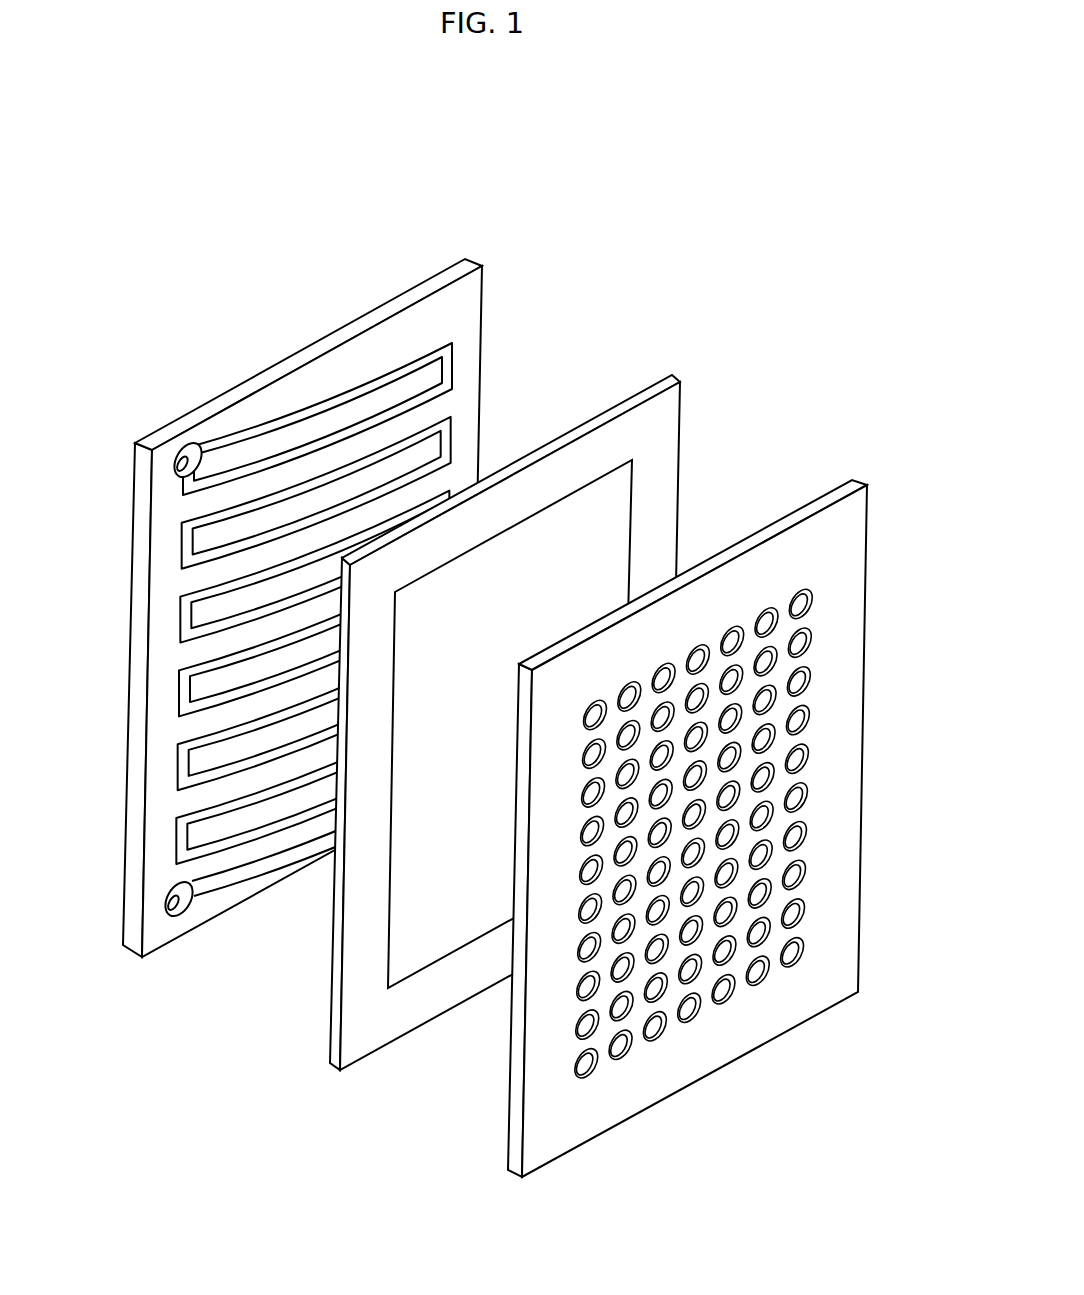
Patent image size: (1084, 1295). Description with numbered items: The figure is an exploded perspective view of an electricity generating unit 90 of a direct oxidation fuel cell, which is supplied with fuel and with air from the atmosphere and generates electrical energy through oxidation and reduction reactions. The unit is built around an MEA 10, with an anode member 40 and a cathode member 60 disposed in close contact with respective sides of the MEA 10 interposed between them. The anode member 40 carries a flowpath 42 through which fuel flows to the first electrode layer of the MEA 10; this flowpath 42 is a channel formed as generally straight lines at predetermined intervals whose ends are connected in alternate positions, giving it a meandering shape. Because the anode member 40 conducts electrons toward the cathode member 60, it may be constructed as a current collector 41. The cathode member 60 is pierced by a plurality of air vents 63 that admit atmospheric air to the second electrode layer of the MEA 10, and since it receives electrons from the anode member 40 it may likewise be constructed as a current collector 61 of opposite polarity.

The electricity generating unit 90 is at (768, 277).
The anode member 40 is at (259, 616).
The current collector 41 is at (257, 882).
The flowpath 42 is at (336, 410).
The MEA 10 is at (312, 1065).
The cathode member 60 is at (676, 829).
The current collector 61 is at (697, 1065).
The air vents 63 is at (826, 590).